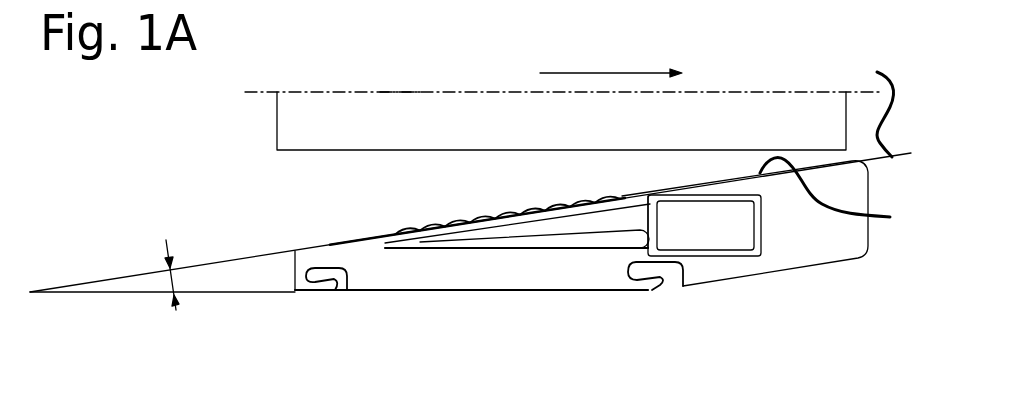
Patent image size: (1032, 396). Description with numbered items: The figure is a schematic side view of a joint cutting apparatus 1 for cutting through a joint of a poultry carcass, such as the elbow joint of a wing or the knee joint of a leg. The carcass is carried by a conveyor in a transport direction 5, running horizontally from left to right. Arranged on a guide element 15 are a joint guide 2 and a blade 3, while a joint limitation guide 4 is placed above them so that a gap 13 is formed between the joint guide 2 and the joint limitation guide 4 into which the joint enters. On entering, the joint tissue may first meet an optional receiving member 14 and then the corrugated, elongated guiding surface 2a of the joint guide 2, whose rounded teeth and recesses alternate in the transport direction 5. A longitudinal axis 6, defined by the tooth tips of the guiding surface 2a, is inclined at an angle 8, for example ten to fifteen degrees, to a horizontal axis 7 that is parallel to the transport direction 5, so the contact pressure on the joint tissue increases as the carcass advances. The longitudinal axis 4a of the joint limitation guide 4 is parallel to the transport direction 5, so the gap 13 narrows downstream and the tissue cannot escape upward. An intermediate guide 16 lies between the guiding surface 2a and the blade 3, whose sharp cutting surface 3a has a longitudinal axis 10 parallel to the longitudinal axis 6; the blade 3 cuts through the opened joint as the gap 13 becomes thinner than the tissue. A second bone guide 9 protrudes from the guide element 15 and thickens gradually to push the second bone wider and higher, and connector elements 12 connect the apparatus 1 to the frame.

The joint cutting apparatus 1 is at (312, 82).
The joint guide 2 is at (445, 217).
The guiding surface 2a is at (380, 240).
The blade 3 is at (722, 178).
The cutting surface 3a is at (839, 193).
The joint limitation guide 4 is at (485, 113).
The longitudinal axis of the joint limitation guide 4a is at (395, 93).
The transport direction 5 is at (605, 73).
The longitudinal axis of the guiding surface 6 is at (243, 258).
The horizontal axis 7 is at (140, 296).
The angle 8 is at (176, 268).
The second bone guide 9 is at (560, 248).
The longitudinal axis of the cutting surface 10 is at (871, 106).
The connector elements 12 is at (330, 281).
The gap 13 is at (314, 168).
The receiving member 14 is at (320, 246).
The guide element 15 is at (480, 292).
The intermediate guide 16 is at (622, 196).